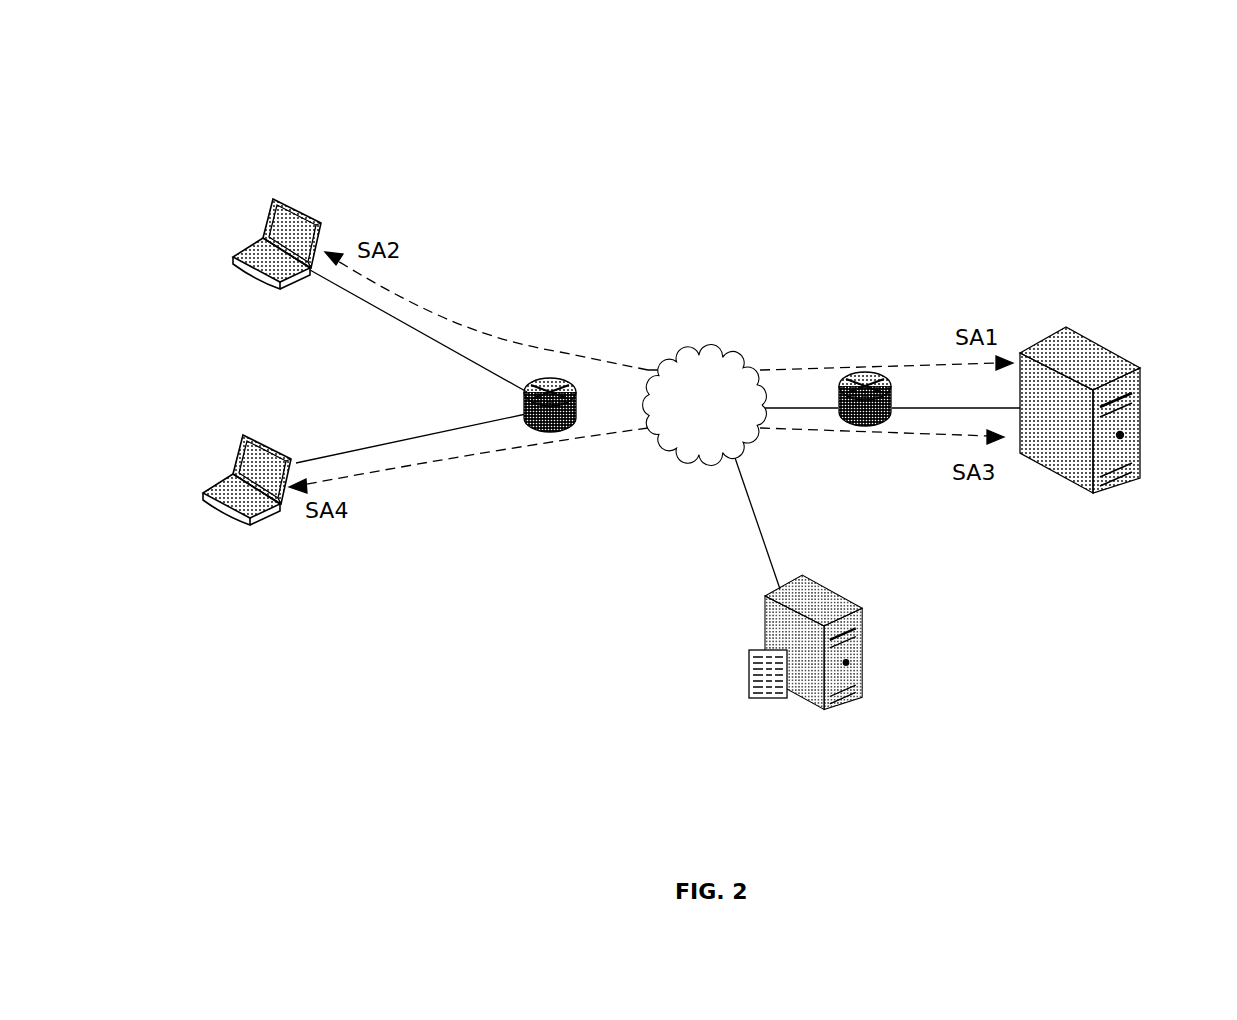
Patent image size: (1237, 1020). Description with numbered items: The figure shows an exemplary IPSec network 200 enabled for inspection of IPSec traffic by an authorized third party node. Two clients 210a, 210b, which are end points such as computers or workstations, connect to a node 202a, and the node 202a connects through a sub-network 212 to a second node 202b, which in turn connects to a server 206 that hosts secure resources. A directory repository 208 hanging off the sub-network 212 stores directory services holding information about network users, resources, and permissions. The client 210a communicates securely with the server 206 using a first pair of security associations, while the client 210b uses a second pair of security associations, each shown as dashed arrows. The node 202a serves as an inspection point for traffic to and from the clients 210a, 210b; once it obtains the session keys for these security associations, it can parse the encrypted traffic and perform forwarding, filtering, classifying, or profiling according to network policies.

The network 200 is at (244, 100).
The node 202a is at (577, 403).
The node 202b is at (891, 392).
The server 206 is at (1050, 472).
The directory repository 208 is at (765, 617).
The client 210a is at (262, 241).
The client 210b is at (236, 468).
The sub-network 212 is at (690, 356).